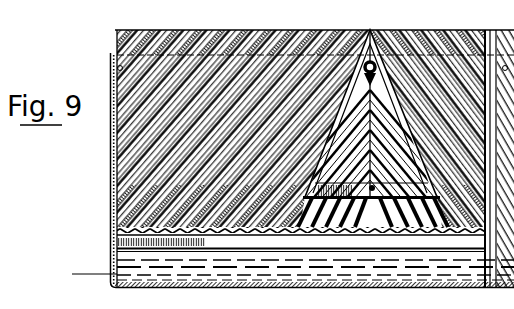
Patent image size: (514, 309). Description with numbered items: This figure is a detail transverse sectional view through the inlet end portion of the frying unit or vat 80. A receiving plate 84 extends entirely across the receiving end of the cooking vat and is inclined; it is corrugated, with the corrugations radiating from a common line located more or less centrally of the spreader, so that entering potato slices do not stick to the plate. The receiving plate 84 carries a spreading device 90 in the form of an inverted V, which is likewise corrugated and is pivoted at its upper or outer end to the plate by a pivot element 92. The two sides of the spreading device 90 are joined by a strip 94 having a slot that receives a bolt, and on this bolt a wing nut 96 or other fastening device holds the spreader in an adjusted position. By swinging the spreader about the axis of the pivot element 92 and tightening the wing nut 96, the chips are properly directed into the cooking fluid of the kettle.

The frying unit or vat 80 is at (110, 252).
The receiving plate 84 is at (167, 176).
The spreading device 90 is at (378, 105).
The pivot element 92 is at (368, 62).
The strip 94 is at (378, 189).
The wing nut 96 is at (365, 180).